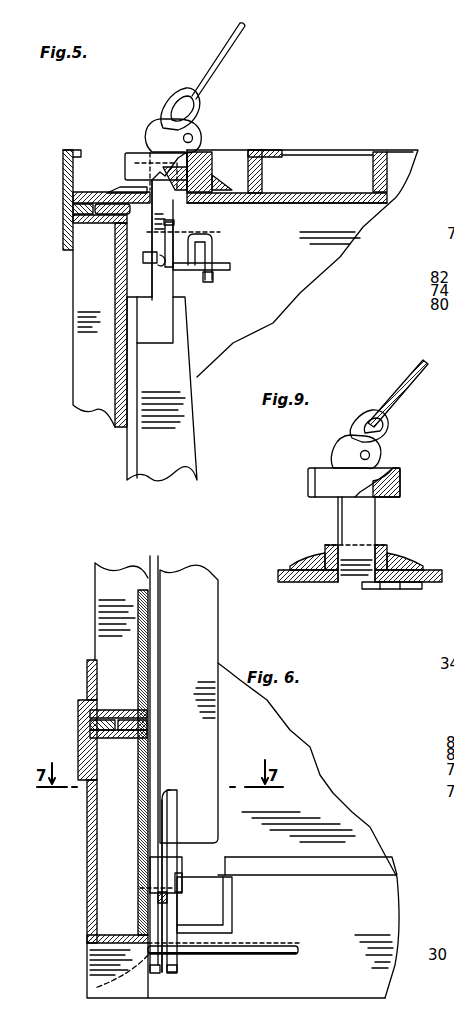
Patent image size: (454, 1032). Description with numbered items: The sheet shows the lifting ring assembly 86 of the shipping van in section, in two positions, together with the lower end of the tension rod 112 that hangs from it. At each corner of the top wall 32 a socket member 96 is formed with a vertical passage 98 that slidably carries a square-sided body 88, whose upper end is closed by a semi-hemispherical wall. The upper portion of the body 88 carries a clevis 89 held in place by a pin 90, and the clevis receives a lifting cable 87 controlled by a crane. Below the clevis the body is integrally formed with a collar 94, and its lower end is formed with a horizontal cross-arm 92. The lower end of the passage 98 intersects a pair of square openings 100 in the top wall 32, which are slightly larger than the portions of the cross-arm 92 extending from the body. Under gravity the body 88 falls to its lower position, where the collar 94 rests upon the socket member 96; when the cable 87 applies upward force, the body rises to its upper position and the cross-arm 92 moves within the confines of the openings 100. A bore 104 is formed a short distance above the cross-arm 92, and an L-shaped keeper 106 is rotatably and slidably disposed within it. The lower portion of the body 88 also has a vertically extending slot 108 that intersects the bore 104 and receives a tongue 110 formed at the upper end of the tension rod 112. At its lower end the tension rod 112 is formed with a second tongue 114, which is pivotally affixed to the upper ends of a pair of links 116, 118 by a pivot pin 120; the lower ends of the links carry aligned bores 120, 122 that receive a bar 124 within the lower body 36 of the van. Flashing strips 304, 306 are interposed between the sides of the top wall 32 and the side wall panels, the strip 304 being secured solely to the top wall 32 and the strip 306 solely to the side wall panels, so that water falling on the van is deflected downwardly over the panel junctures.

In FIG. 5, the top wall 32 is at (322, 170).
In FIG. 6, the lower body block 36 is at (313, 772).
In FIG. 5, the lifting ring assembly 86 is at (194, 148).
In FIG. 9, the lifting ring assembly 86 is at (373, 468).
In FIG. 5, the lifting cable 87 is at (233, 41).
In FIG. 9, the lifting cable 87 is at (414, 388).
In FIG. 5, the square-sided body 88 is at (203, 188).
In FIG. 9, the square-sided body 88 is at (343, 508).
In FIG. 5, the clevis 89 is at (197, 94).
In FIG. 9, the clevis 89 is at (382, 431).
In FIG. 5, the pin 90 is at (194, 136).
In FIG. 5, the horizontal cross-arm 92 is at (147, 260).
In FIG. 9, the horizontal cross-arm 92 is at (381, 574).
In FIG. 5, the collar 94 is at (136, 160).
In FIG. 9, the collar 94 is at (322, 480).
In FIG. 5, the socket member 96 is at (130, 190).
In FIG. 9, the socket member 96 is at (324, 555).
In FIG. 5, the vertical passage 98 is at (214, 150).
In FIG. 9, the vertical passage 98 is at (326, 555).
In FIG. 5, the square openings 100 is at (150, 206).
In FIG. 5, the bore 104 is at (199, 243).
In FIG. 5, the L-shaped keeper 106 is at (212, 253).
In FIG. 5, the vertically extending slot 108 is at (163, 257).
In FIG. 5, the tongue 110 is at (171, 284).
In FIG. 5, the tension rod 112 is at (184, 449).
In FIG. 6, the tension rod 112 is at (204, 641).
In FIG. 6, the second tongue 114 is at (168, 849).
In FIG. 6, the link 116 is at (157, 910).
In FIG. 6, the link 118 is at (176, 911).
In FIG. 6, the pivot pin 120 is at (181, 876).
In FIG. 6, the aligned bore 122 is at (177, 960).
In FIG. 6, the bar 124 is at (238, 950).
In FIG. 5, the flashing strip 304 is at (64, 208).
In FIG. 6, the flashing strip 306 is at (80, 757).